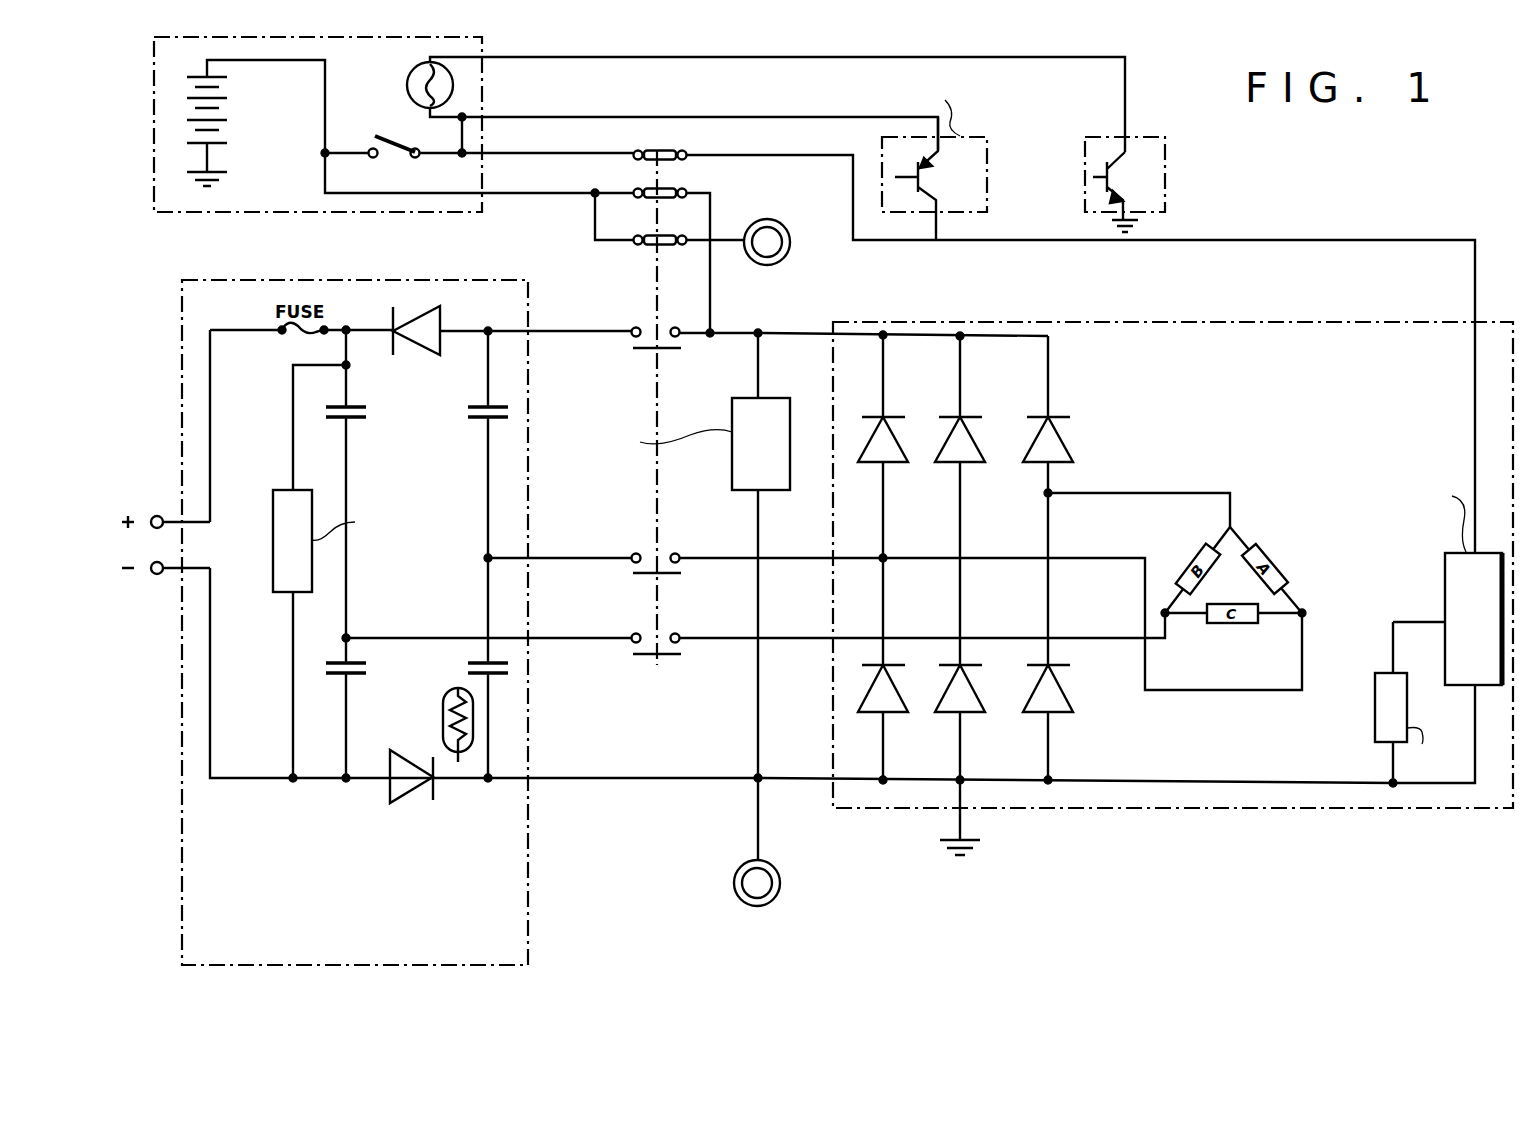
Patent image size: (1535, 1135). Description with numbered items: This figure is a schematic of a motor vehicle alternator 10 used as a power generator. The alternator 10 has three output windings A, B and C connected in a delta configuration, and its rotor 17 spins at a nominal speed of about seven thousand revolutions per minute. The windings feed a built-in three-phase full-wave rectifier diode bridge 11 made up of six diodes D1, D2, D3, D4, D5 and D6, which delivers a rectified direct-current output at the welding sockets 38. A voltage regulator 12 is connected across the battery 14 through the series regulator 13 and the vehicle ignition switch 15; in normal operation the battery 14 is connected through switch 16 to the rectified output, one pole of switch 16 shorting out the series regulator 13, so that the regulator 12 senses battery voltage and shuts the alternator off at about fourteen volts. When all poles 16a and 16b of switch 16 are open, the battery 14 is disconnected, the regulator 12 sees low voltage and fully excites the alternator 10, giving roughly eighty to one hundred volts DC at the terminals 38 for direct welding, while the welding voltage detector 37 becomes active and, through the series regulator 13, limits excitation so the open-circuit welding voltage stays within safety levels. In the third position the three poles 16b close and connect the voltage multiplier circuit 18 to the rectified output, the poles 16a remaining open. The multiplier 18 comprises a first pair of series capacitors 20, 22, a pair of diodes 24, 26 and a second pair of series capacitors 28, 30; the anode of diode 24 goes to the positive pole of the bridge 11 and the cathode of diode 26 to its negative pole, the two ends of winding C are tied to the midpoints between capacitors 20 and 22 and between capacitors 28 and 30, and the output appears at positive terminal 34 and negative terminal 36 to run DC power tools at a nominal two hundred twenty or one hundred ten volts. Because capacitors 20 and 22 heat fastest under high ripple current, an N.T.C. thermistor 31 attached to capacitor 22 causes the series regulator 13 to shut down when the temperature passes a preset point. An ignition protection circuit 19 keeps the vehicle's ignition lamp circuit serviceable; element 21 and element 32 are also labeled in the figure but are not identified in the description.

The motor vehicle alternator 10 is at (1320, 402).
The rectifier diode bridge 11 is at (1095, 425).
The voltage regulator 12 is at (1446, 545).
The series regulator 13 is at (965, 137).
The battery 14 is at (226, 126).
The vehicle ignition switch 15 is at (400, 140).
The switch 16 is at (638, 284).
The poles of switch 16a is at (1035, 338).
The poles of switch 16b is at (824, 496).
The alternator rotor 17 is at (1376, 742).
The voltage multiplier circuit 18 is at (424, 282).
The ignition protection circuit 19 is at (1165, 170).
The capacitor 20 is at (472, 415).
The indicator lamp 21 is at (408, 82).
The capacitor 22 is at (516, 664).
The diode 24 is at (440, 326).
The diode 26 is at (390, 790).
The capacitor 28 is at (328, 414).
The capacitor 30 is at (375, 666).
The N.T.C. thermistor 31 is at (446, 704).
The resistor 32 is at (276, 490).
The positive terminal 34 is at (166, 512).
The negative terminal 36 is at (160, 574).
The welding voltage detector 37 is at (750, 389).
The welding sockets 38 is at (790, 238).
The diode D1 is at (886, 466).
The diode D2 is at (964, 466).
The diode D3 is at (1052, 466).
The diode D4 is at (886, 714).
The diode D5 is at (964, 714).
The diode D6 is at (1052, 714).